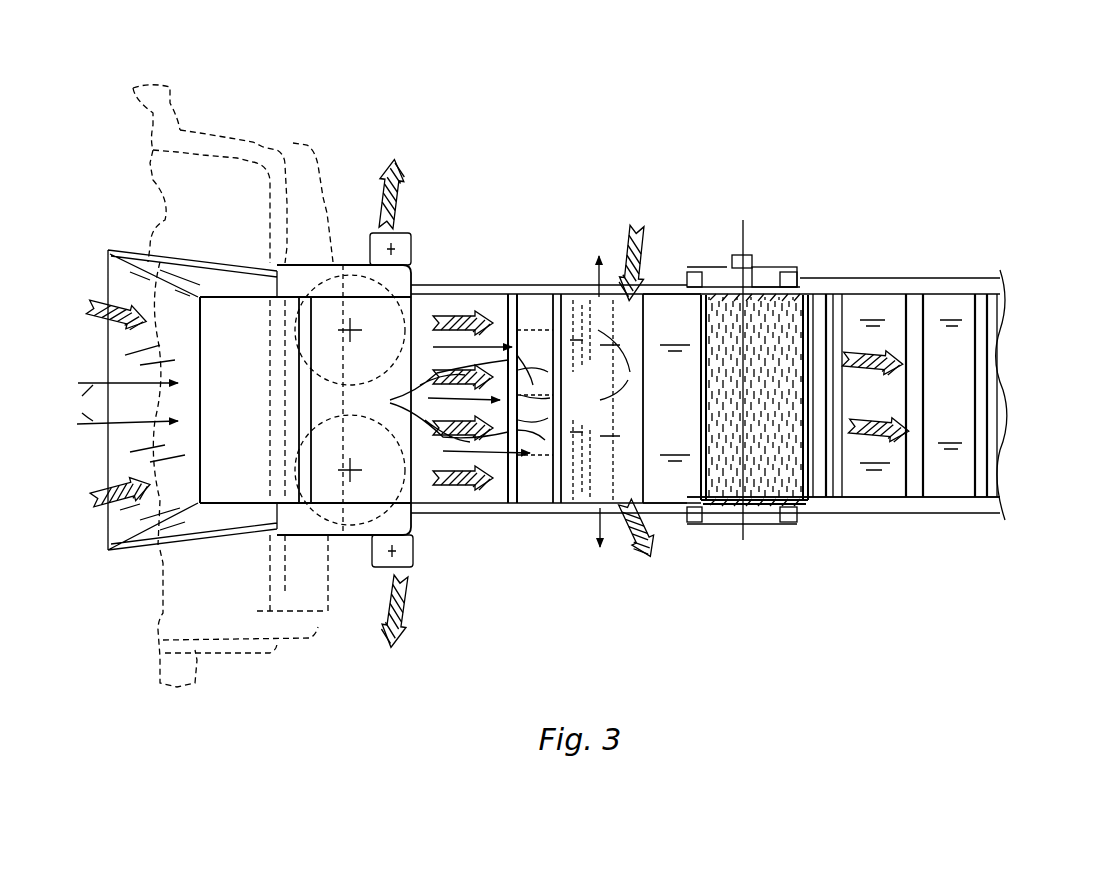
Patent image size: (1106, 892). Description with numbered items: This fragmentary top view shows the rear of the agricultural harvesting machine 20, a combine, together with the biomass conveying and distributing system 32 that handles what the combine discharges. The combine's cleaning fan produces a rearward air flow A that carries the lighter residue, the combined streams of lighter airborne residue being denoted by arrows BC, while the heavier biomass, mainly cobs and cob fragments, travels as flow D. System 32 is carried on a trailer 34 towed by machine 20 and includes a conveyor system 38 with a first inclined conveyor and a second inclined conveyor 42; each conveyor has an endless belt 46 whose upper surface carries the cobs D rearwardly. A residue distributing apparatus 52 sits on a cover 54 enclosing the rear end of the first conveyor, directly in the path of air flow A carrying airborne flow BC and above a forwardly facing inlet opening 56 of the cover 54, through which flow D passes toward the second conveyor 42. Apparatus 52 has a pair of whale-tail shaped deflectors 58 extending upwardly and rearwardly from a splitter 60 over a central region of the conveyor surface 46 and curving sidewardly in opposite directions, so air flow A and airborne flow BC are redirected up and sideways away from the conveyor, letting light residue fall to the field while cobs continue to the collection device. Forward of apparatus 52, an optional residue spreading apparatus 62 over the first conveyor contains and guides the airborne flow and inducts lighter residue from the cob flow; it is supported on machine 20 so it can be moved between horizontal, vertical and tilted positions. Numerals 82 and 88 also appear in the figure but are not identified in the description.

The agricultural harvesting machine 20 is at (265, 92).
The biomass conveying and distributing system 32 is at (745, 135).
The trailer 34 is at (920, 518).
The conveyor system 38 is at (832, 267).
The second inclined conveyor 42 is at (540, 290).
The endless belt 46 is at (950, 375).
The residue distributing apparatus 52 is at (570, 507).
The cover 54 is at (663, 305).
The inlet opening 56 is at (533, 507).
The deflectors 58 is at (527, 380).
The splitter 60 is at (523, 303).
The residue spreading apparatus 62 is at (346, 258).
The mounting tab 82 is at (408, 232).
The fastener bracket 88 is at (770, 280).
The air flow A is at (613, 592).
The airborne flow of lighter residue BC is at (378, 152).
The flow of heavier biomass D is at (450, 312).